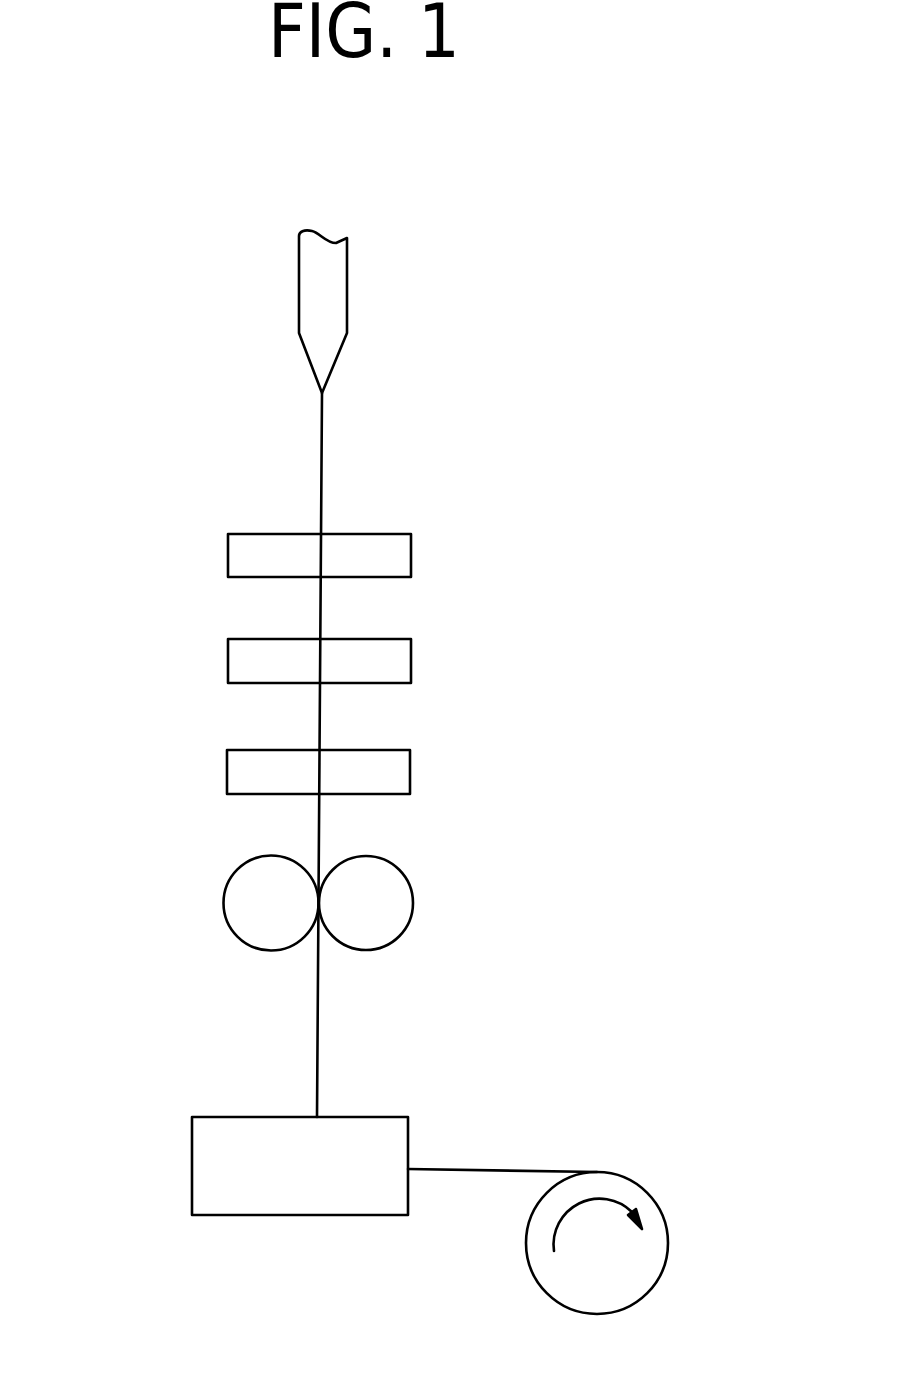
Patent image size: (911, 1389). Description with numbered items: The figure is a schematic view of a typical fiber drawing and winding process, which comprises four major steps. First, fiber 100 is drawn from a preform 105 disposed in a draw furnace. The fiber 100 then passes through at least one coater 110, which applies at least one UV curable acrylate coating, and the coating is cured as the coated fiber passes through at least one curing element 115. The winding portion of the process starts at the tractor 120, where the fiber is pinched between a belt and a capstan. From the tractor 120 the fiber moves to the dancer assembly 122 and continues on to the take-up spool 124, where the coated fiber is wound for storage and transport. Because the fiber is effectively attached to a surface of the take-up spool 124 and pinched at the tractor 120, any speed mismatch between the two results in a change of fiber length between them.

The preform 105 is at (328, 275).
The fiber 100 is at (322, 428).
The coater 110 is at (411, 552).
The curing element 115 is at (410, 768).
The tractor 120 is at (412, 902).
The dancer assembly 122 is at (192, 1169).
The take-up spool 124 is at (647, 1253).